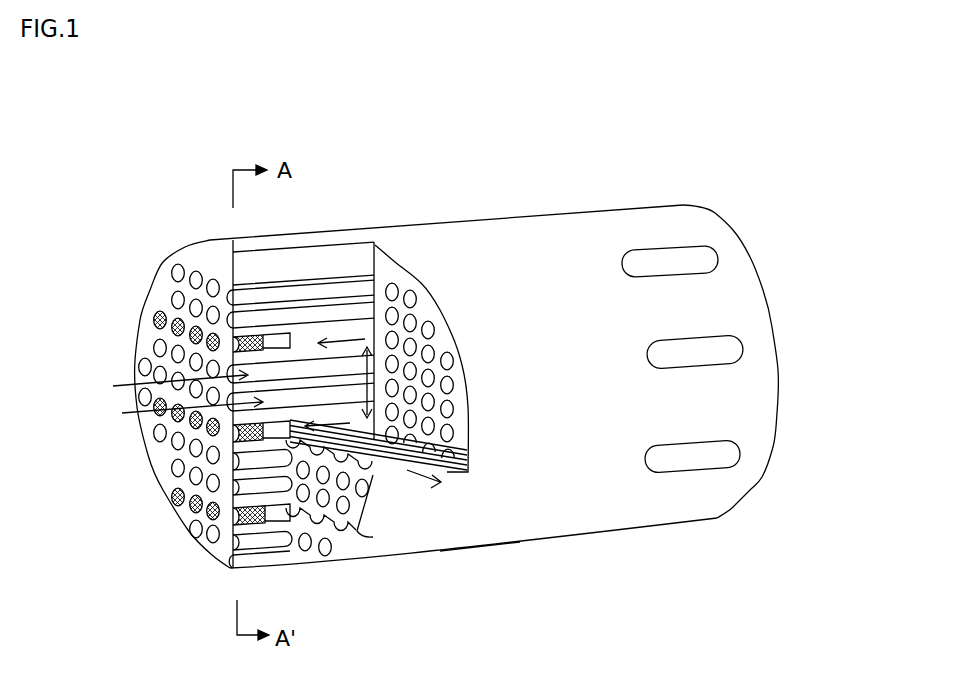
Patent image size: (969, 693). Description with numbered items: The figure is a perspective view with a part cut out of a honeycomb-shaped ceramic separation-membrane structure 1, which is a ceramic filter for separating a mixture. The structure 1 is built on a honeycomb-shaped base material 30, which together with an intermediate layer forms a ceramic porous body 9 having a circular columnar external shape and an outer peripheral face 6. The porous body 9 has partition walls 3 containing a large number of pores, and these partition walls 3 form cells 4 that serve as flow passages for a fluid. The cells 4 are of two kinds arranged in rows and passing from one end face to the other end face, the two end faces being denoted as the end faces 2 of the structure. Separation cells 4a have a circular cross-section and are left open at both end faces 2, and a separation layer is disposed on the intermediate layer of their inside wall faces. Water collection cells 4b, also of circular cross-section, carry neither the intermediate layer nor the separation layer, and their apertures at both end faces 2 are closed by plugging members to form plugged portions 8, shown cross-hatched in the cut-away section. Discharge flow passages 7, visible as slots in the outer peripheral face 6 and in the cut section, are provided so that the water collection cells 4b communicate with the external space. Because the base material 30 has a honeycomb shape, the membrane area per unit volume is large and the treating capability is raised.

The honeycomb-shaped ceramic separation-membrane structure 1 is at (572, 98).
The end faces 2 is at (147, 352).
The partition walls 3 is at (260, 312).
The cells 4 is at (370, 187).
The separation cells 4a is at (333, 290).
The water collection cells 4b is at (362, 333).
The outer peripheral face 6 is at (562, 527).
The discharge flow passages 7 is at (287, 332).
The plugged portions 8 is at (233, 351).
The ceramic porous body 9 is at (474, 240).
The honeycomb-shaped base material 30 is at (492, 520).